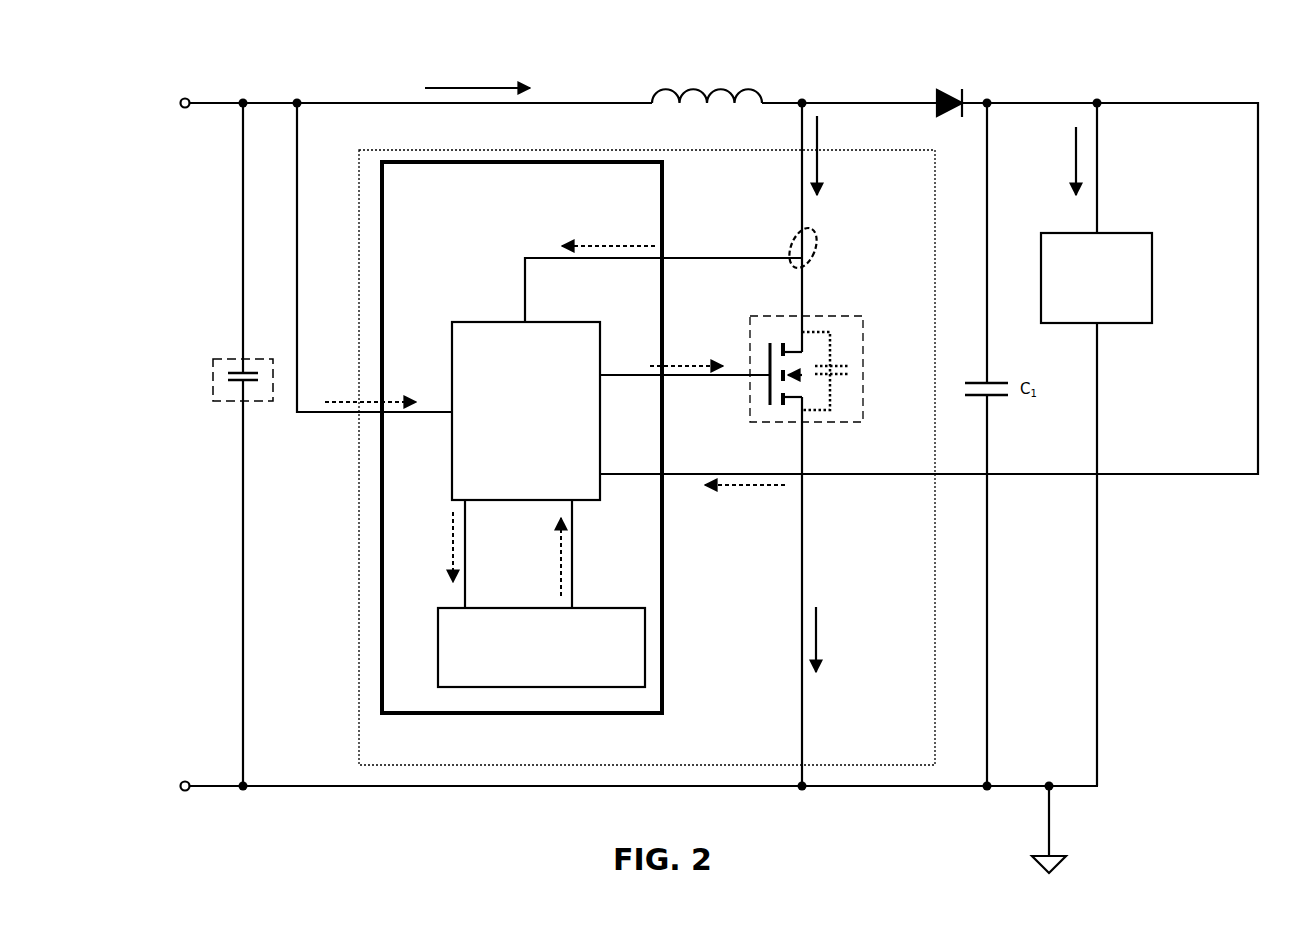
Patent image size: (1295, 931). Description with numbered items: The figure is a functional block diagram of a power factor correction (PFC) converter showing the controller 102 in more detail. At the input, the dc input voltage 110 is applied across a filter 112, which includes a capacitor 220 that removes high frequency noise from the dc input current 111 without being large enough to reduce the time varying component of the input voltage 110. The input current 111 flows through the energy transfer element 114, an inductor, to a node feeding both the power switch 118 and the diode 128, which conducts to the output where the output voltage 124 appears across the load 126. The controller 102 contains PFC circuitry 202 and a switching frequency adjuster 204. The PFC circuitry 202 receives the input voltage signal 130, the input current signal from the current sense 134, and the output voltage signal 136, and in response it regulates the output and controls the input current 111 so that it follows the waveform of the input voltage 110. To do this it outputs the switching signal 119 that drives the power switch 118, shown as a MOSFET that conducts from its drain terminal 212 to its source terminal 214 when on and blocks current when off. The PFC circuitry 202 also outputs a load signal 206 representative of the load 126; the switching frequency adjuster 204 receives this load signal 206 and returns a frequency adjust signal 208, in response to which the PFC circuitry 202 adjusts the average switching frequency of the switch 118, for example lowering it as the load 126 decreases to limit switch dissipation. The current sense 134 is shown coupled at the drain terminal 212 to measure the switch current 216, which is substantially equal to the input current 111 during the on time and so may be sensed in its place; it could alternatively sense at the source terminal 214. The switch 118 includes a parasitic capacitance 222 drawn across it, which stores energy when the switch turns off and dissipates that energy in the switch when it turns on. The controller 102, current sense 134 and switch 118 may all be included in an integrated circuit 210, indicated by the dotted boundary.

The controller 102 is at (668, 712).
The input voltage 110 is at (140, 385).
The input current 111 is at (492, 64).
The filter 112 is at (227, 347).
The energy transfer element 114 is at (742, 74).
The power switch 118 is at (866, 316).
The switching signal 119 is at (696, 340).
The output voltage 124 is at (1204, 252).
The load 126 is at (1123, 328).
The diode 128 is at (976, 78).
The input voltage signal 130 is at (344, 372).
The current sense 134 is at (608, 224).
The output voltage signal 136 is at (743, 518).
The PFC circuitry 202 is at (467, 318).
The switching frequency adjuster 204 is at (614, 597).
The load signal 206 is at (441, 555).
The frequency adjust signal 208 is at (549, 572).
The integrated circuit 210 is at (352, 708).
The drain terminal 212 is at (800, 290).
The source terminal 214 is at (800, 442).
The switch current 216 is at (825, 168).
The capacitor 220 is at (210, 403).
The parasitic capacitance 222 is at (845, 380).